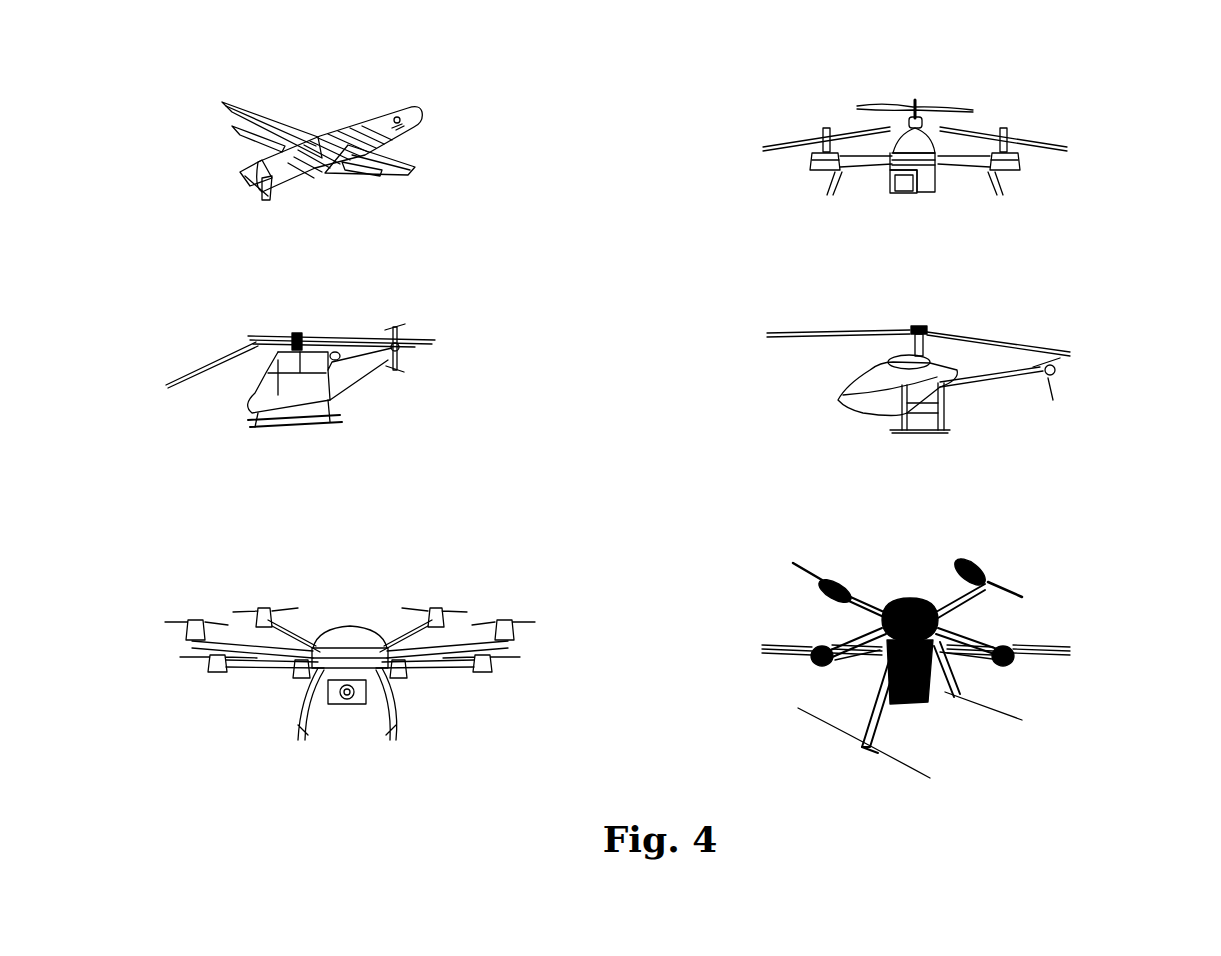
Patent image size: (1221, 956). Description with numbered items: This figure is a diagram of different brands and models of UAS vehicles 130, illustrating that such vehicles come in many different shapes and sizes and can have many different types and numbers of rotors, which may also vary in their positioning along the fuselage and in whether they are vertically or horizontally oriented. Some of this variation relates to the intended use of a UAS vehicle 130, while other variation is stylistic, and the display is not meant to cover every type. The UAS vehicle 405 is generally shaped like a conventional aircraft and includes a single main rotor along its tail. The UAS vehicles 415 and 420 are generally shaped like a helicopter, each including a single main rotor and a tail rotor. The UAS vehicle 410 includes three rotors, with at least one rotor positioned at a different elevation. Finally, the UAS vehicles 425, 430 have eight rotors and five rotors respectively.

The UAS vehicles 130 is at (1080, 52).
The UAS vehicle 405 is at (339, 140).
The UAS vehicle 410 is at (915, 137).
The UAS vehicle 415 is at (300, 360).
The UAS vehicle 420 is at (918, 371).
The UAS vehicle 425 is at (350, 660).
The UAS vehicle 430 is at (916, 666).